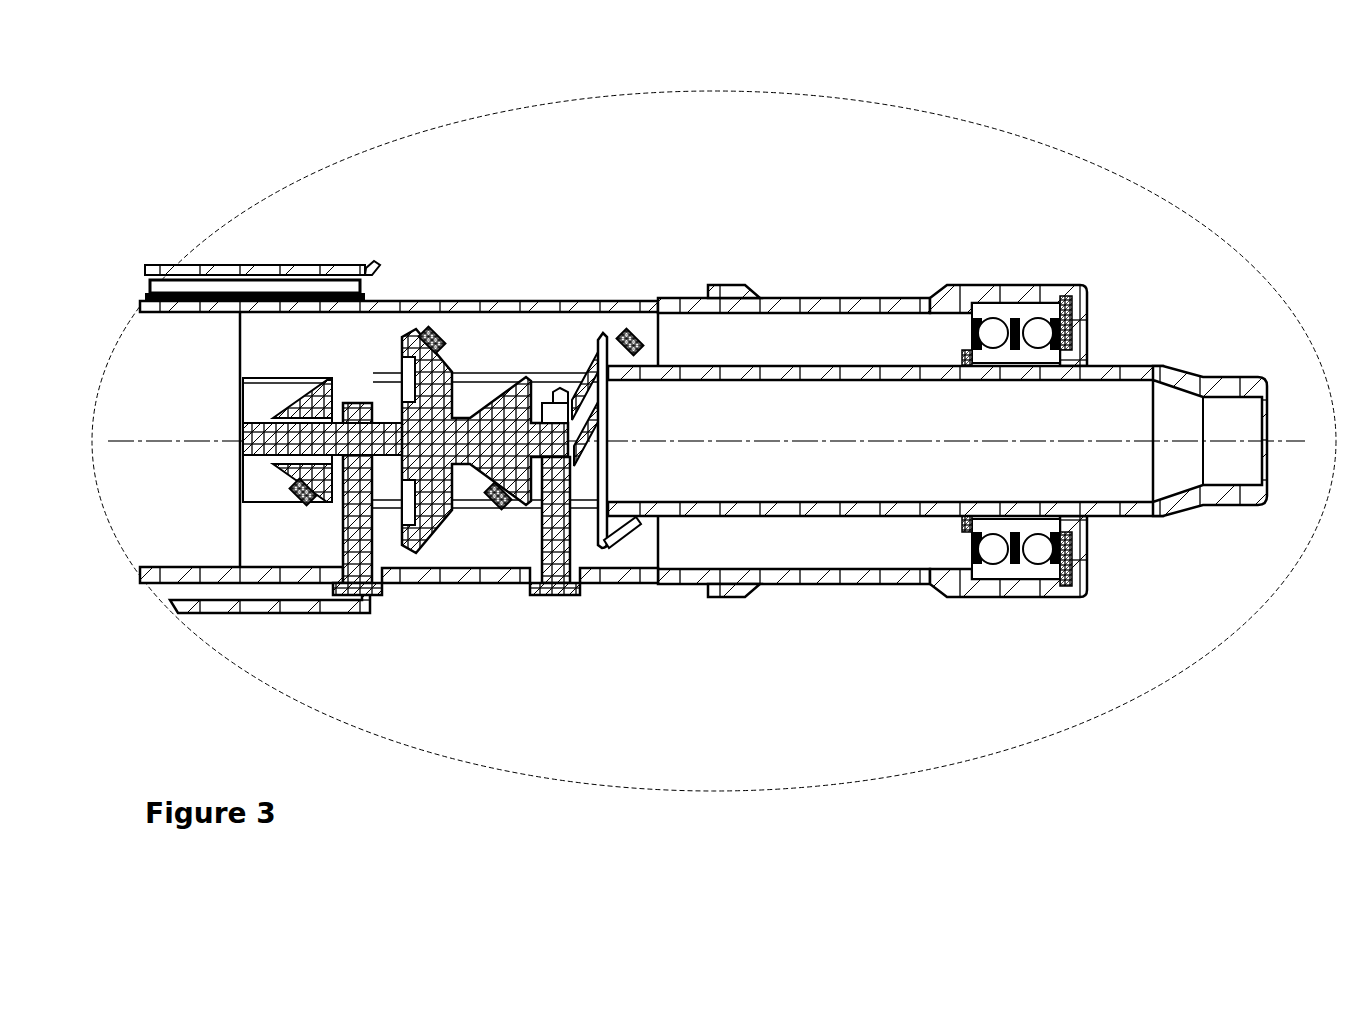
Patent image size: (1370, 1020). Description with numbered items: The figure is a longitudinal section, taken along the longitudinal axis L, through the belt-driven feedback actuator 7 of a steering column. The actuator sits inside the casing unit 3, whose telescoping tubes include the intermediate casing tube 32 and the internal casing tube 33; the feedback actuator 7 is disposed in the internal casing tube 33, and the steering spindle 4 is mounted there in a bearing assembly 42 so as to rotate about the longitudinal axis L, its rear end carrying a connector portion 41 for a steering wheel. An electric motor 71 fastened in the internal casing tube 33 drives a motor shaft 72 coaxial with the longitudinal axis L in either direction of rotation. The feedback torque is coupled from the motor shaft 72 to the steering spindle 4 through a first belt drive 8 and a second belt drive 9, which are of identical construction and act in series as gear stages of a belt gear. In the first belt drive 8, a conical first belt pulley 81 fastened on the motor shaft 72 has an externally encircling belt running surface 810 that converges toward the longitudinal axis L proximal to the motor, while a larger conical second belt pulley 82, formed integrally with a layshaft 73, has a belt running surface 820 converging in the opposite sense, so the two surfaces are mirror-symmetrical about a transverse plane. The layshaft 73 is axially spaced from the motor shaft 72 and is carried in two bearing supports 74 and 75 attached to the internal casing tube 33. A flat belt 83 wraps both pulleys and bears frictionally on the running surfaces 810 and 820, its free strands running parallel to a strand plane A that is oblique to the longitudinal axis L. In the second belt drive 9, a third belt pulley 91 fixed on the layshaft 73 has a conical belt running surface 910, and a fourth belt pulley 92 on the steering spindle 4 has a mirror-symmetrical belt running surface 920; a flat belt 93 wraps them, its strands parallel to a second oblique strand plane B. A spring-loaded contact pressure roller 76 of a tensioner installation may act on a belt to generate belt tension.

The casing unit 3 is at (387, 404).
The intermediate casing tube 32 is at (296, 266).
The internal casing tube 33 is at (734, 428).
The steering spindle 4 is at (950, 341).
The connector portion 41 is at (1233, 393).
The bearing assembly 42 is at (1037, 335).
The feedback actuator 7 is at (477, 446).
The electric motor 71 is at (172, 548).
The motor shaft 72 is at (227, 545).
The layshaft 73 is at (462, 472).
The bearing support 74 is at (352, 575).
The bearing support 75 is at (553, 560).
The contact pressure roller 76 is at (688, 268).
The first belt drive 8 is at (373, 446).
The first belt pulley 81 is at (248, 334).
The belt running surface 810 is at (290, 373).
The second belt pulley 82 is at (400, 337).
The belt running surface 820 is at (418, 333).
The belt 83 is at (303, 502).
The second belt drive 9 is at (657, 430).
The third belt pulley 91 is at (557, 325).
The belt running surface 910 is at (530, 400).
The fourth belt pulley 92 is at (608, 535).
The belt running surface 920 is at (637, 545).
The belt 93 is at (502, 520).
The longitudinal axis L is at (1302, 440).
The strand plane A is at (493, 345).
The strand plane B is at (680, 284).